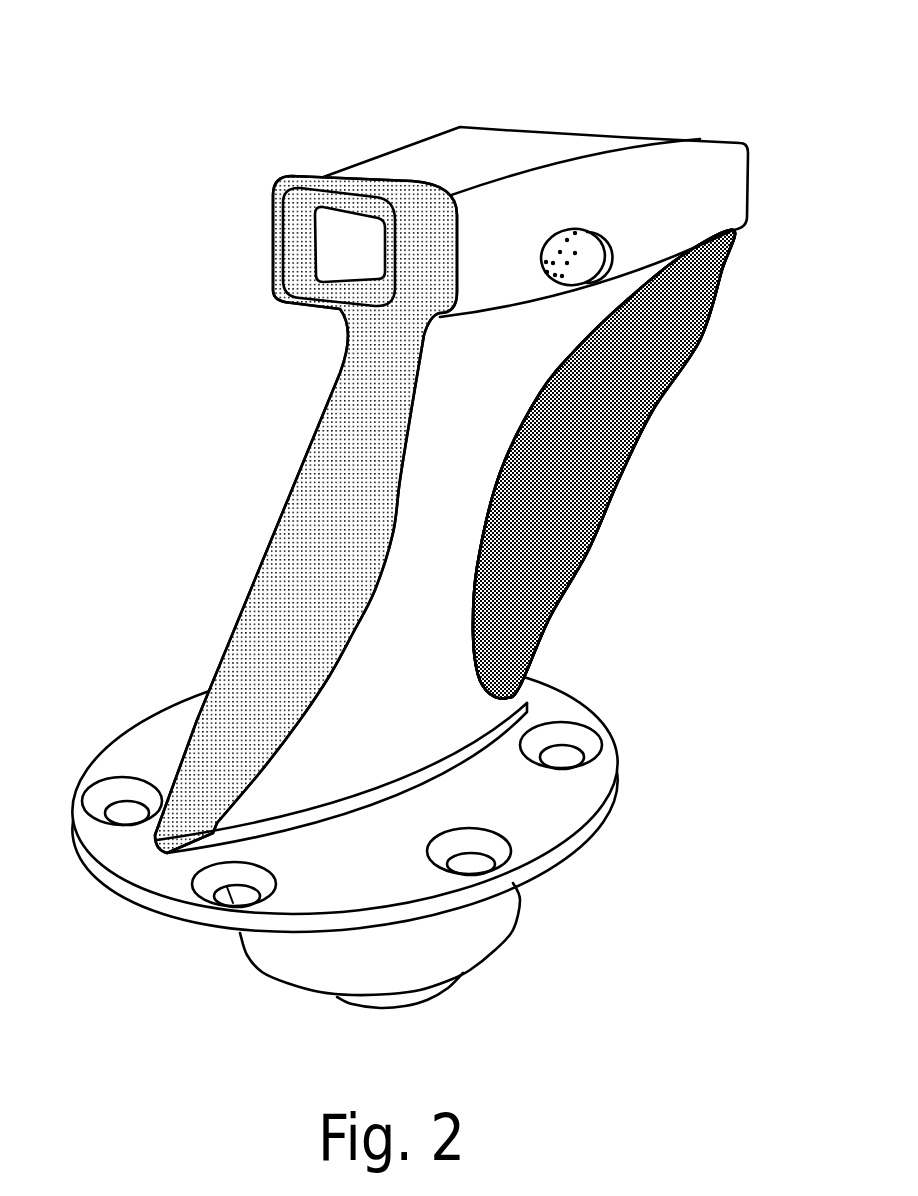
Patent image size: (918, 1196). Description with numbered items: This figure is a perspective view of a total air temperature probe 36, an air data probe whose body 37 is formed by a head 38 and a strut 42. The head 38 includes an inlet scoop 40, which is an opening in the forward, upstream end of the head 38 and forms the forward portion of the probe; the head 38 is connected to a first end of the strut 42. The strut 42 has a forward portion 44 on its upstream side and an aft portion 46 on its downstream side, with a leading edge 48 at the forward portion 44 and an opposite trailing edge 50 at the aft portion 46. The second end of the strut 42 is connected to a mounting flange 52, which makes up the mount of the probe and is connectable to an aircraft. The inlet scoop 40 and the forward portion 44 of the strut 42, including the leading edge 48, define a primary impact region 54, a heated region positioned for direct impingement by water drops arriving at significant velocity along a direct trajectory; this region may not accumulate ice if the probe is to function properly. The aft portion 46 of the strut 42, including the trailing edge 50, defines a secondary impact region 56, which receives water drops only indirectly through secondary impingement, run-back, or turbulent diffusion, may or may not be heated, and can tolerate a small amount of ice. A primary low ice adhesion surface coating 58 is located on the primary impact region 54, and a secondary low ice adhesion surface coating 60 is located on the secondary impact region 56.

The total air temperature probe 36 is at (167, 108).
The body 37 is at (224, 432).
The head 38 is at (480, 150).
The inlet scoop 40 is at (447, 200).
The strut 42 is at (373, 665).
The forward portion 44 is at (270, 603).
The aft portion 46 is at (540, 583).
The leading edge 48 is at (193, 733).
The trailing edge 50 is at (622, 468).
The mounting flange 52 is at (157, 873).
The primary impact region 54 is at (318, 183).
The secondary impact region 56 is at (563, 517).
The primary low ice adhesion surface coating 58 is at (358, 372).
The secondary low ice adhesion surface coating 60 is at (590, 417).